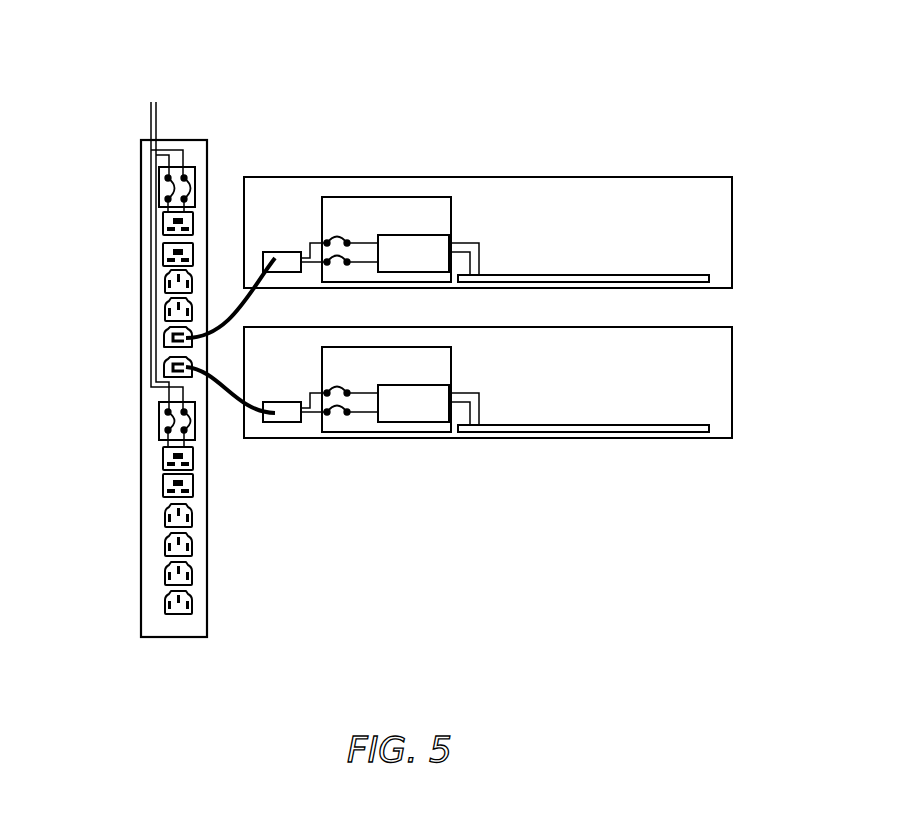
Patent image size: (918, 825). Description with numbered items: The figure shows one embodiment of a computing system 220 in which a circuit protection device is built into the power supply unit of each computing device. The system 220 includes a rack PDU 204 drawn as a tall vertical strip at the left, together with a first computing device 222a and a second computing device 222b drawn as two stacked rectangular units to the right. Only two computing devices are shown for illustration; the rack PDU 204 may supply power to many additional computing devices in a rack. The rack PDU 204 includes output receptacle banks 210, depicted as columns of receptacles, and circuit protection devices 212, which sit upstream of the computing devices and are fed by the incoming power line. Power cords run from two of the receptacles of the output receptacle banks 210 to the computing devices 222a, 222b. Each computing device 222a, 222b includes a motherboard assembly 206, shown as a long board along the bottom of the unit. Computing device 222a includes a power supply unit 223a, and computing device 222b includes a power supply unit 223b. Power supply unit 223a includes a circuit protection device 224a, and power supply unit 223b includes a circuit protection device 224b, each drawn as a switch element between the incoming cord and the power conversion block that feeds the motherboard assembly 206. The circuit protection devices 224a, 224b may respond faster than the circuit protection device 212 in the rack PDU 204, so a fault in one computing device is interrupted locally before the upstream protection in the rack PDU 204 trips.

The rack PDU 204 is at (185, 140).
The motherboard assembly 206 is at (536, 274).
The output receptacle banks 210 is at (152, 294).
The circuit protection devices 212 is at (158, 183).
The system 220 is at (436, 101).
The computing device 222a is at (488, 232).
The computing device 222b is at (488, 382).
The power supply unit 223a is at (386, 239).
The power supply unit 223b is at (386, 389).
The circuit protection device 224a is at (337, 236).
The circuit protection device 224b is at (337, 386).